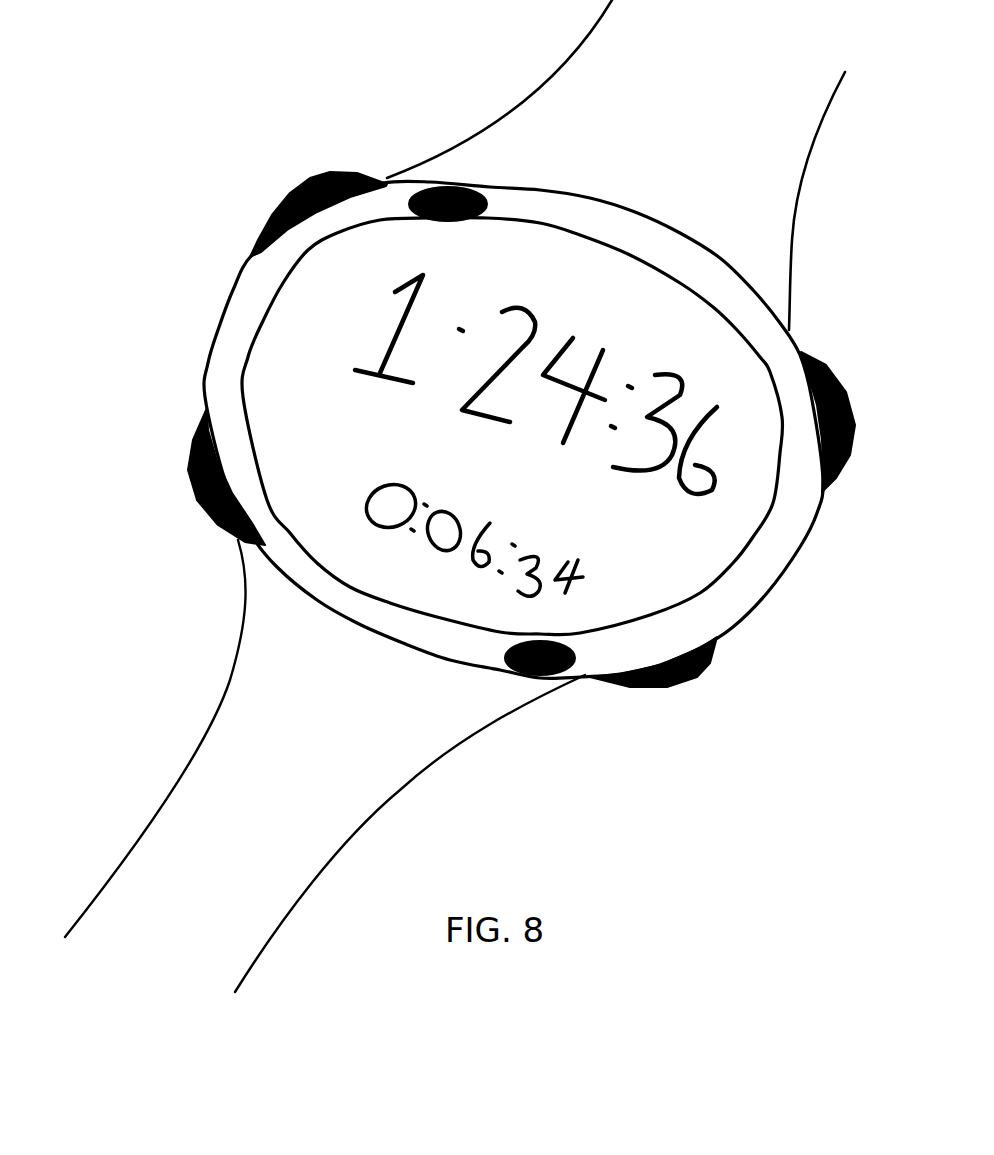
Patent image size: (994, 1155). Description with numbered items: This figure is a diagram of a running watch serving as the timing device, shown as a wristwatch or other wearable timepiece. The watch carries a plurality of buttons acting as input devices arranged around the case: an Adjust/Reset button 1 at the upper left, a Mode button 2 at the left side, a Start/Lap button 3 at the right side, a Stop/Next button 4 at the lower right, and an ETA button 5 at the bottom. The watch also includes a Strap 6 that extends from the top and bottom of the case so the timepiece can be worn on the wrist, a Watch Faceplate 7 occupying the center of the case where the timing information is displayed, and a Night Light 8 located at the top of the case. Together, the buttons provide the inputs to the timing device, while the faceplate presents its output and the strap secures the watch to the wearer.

The Adjust/Reset button 1 is at (322, 172).
The Mode button 2 is at (197, 497).
The Start/Lap button 3 is at (847, 383).
The Stop/Next button 4 is at (693, 677).
The ETA button 5 is at (550, 677).
The Strap 6 is at (765, 200).
The Watch Faceplate 7 is at (693, 332).
The Night Light 8 is at (441, 188).